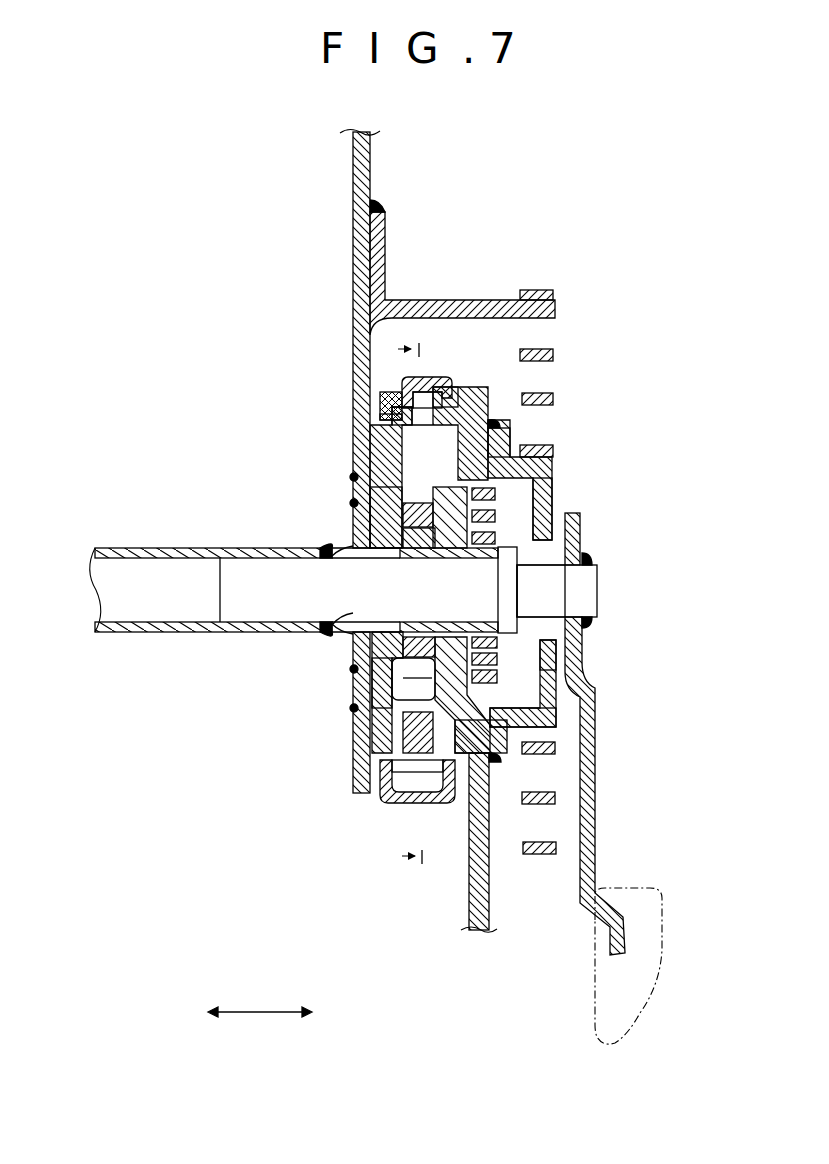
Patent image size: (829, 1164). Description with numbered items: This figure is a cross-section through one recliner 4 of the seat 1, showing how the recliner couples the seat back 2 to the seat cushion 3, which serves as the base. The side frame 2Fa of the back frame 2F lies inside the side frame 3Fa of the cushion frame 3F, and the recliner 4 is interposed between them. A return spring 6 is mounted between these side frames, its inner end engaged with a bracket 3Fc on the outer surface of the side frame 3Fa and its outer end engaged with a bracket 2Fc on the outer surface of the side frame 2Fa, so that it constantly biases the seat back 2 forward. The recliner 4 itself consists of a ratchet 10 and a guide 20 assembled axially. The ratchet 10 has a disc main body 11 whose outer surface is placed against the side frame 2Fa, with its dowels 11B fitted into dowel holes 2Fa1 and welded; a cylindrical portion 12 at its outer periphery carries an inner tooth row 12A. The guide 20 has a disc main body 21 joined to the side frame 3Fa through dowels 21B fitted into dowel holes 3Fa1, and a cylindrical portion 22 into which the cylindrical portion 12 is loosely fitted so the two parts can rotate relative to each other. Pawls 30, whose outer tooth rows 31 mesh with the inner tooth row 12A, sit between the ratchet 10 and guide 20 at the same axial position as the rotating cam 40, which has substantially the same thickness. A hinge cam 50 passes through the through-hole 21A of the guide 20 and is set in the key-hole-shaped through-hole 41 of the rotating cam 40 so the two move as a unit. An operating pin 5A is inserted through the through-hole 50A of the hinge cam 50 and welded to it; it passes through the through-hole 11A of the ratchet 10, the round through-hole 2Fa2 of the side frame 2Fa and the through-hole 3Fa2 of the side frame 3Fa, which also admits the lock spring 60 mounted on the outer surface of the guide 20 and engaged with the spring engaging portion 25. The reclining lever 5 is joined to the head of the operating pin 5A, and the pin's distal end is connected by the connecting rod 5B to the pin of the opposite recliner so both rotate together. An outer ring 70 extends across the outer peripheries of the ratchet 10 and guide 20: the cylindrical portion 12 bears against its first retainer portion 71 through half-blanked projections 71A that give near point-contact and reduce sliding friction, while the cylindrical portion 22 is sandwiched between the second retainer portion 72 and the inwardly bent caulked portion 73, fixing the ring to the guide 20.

The seat 1 is at (634, 186).
The seat back 2 is at (510, 210).
The back frame 2F is at (379, 462).
The side frame of back frame 2Fa is at (353, 183).
The dowel hole 2Fa1 is at (349, 477).
The through-hole 2Fa2 is at (335, 548).
The bracket 2Fc is at (470, 300).
The seat cushion 3 is at (669, 481).
The cushion frame 3F is at (504, 672).
The side frame of cushion frame 3Fa is at (472, 897).
The dowel hole 3Fa1 is at (492, 745).
The through-hole 3Fa2 is at (531, 475).
The bracket 3Fc is at (546, 490).
The recliner 4 is at (454, 361).
The reclining lever 5 is at (593, 780).
The operating pin 5A is at (586, 592).
The connecting rod 5B is at (150, 548).
The return spring 6 is at (556, 355).
The ratchet 10 is at (384, 453).
The disc main body 11 is at (402, 510).
The through-hole 11A is at (347, 622).
The dowel 11B is at (363, 490).
The cylindrical portion 12 is at (392, 423).
The inner tooth row 12A is at (401, 800).
The guide 20 is at (470, 512).
The disc main body 21 is at (486, 662).
The through-hole 21A is at (498, 632).
The dowel 21B is at (541, 720).
The cylindrical portion 22 is at (446, 384).
The spring engaging portion 25 is at (501, 440).
The pawl 30 is at (386, 745).
The outer tooth row 31 is at (391, 790).
The rotating cam 40 is at (386, 668).
The through-hole 41 is at (386, 526).
The hinge cam 50 is at (422, 558).
The through-hole 50A is at (521, 582).
The lock spring 60 is at (500, 537).
The outer ring 70 is at (428, 376).
The first retainer portion 71 is at (383, 403).
The projection 71A is at (380, 417).
The second retainer portion 72 is at (402, 382).
The caulked portion 73 is at (453, 390).